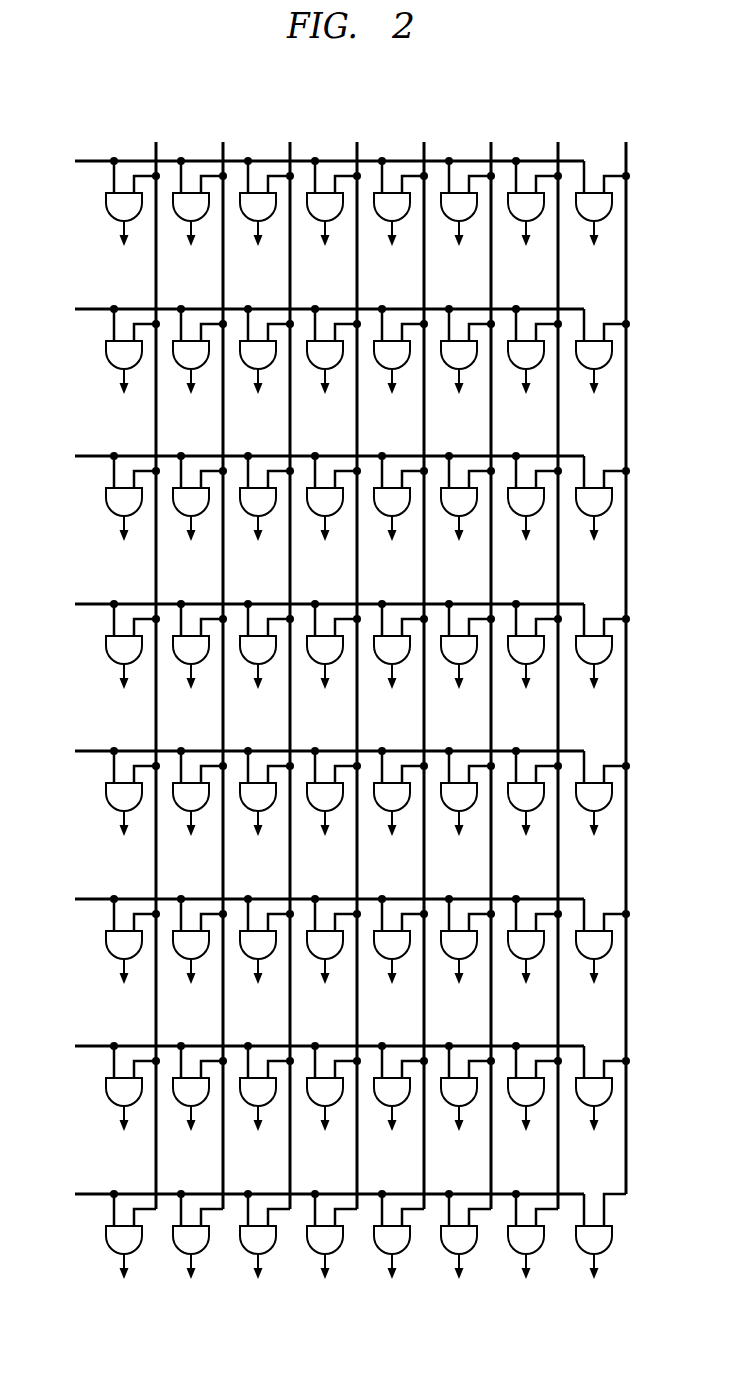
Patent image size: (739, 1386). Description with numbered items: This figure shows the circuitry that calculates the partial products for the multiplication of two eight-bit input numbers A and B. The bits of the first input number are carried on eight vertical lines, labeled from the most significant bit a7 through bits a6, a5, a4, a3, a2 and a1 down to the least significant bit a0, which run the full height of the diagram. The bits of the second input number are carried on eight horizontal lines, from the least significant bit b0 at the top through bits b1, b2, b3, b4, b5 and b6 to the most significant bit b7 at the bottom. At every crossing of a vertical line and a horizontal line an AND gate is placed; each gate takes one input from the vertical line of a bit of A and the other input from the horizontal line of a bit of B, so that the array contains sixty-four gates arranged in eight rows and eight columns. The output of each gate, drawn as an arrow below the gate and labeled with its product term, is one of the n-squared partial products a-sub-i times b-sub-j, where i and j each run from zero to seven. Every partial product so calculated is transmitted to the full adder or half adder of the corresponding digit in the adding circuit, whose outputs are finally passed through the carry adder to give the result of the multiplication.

The multiplicand bit a7 is at (157, 661).
The multiplicand bit a6 is at (224, 661).
The multiplicand bit a5 is at (291, 661).
The multiplicand bit a4 is at (358, 661).
The multiplicand bit a3 is at (425, 661).
The multiplicand bit a2 is at (492, 661).
The multiplicand bit a1 is at (559, 661).
The multiplicand bit a0 is at (627, 654).
The multiplier bit b0 is at (314, 162).
The multiplier bit b1 is at (314, 308).
The multiplier bit b2 is at (314, 456).
The multiplier bit b3 is at (314, 604).
The multiplier bit b4 is at (314, 753).
The multiplier bit b5 is at (314, 893).
The multiplier bit b6 is at (314, 1039).
The multiplier bit b7 is at (314, 1193).